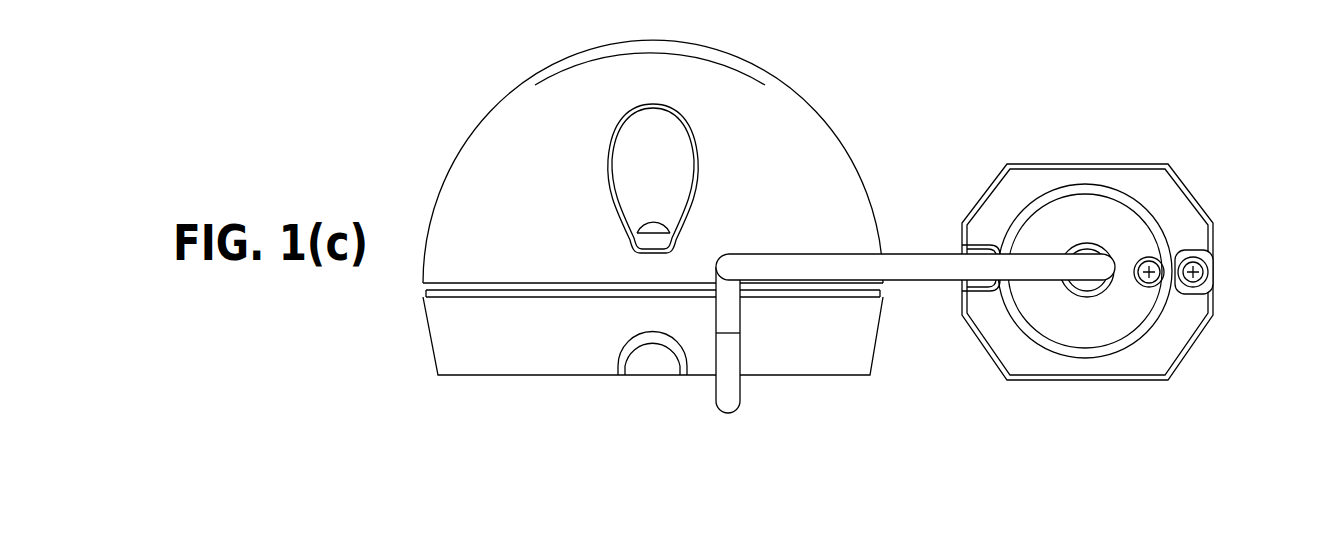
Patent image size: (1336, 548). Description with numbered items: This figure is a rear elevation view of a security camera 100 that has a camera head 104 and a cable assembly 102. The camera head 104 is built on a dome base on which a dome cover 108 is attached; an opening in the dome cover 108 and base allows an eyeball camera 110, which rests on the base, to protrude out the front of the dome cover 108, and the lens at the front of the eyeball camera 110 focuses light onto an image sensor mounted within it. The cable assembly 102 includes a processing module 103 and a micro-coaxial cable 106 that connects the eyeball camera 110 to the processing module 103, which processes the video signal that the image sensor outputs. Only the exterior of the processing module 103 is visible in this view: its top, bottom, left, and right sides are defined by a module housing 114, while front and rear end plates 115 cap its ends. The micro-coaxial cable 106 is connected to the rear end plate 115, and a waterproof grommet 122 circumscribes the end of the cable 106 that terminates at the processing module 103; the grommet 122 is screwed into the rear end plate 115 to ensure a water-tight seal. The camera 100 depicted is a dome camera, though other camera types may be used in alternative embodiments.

The security camera 100 is at (1220, 120).
The cable assembly 102 is at (912, 290).
The processing module 103 is at (1222, 298).
The camera head 104 is at (472, 120).
The micro-coaxial cable 106 is at (915, 254).
The dome cover 108 is at (798, 152).
The eyeball camera 110 is at (606, 55).
The module housing 114 is at (1143, 164).
The end plate 115 is at (1113, 365).
The waterproof grommet 122 is at (1106, 233).